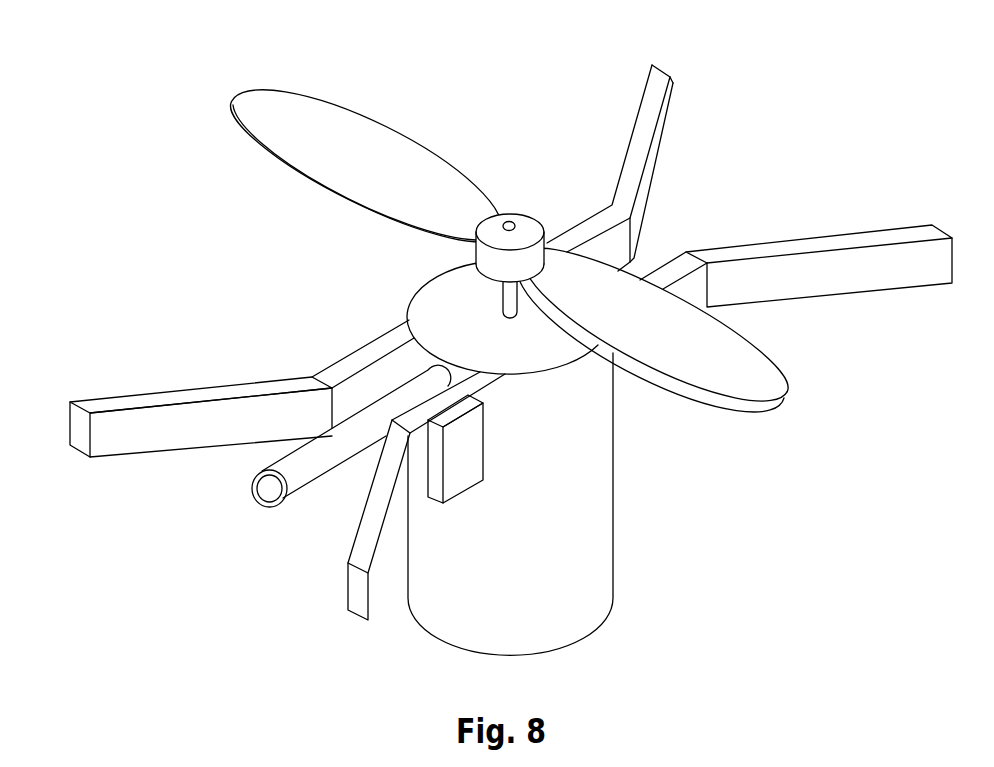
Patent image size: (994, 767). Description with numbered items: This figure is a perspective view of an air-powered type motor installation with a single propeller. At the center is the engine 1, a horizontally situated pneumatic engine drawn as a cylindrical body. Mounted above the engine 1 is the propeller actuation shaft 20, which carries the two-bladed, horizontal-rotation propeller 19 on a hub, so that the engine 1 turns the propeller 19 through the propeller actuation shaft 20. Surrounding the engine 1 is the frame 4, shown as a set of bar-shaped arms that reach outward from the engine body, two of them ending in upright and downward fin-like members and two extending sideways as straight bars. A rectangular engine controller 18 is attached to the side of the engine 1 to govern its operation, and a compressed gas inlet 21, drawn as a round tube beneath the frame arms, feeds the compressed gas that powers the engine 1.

The engine 1 is at (570, 523).
The frame 4 is at (637, 147).
The engine controller 18 is at (463, 447).
The propeller 19 is at (400, 150).
The propeller actuation shaft 20 is at (506, 298).
The compressed gas inlet 21 is at (297, 468).